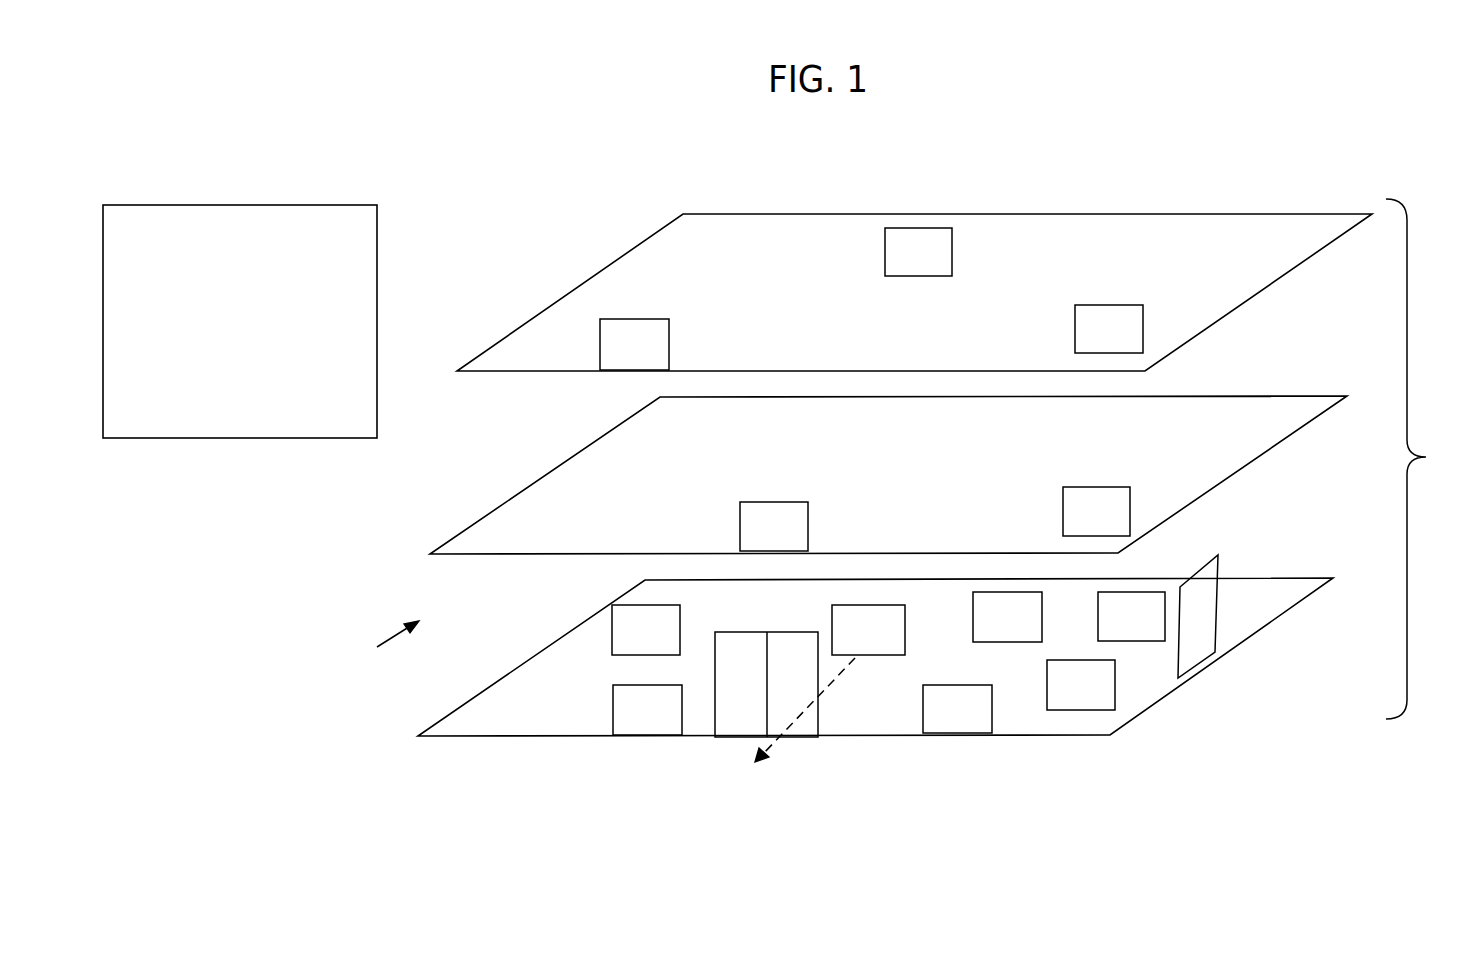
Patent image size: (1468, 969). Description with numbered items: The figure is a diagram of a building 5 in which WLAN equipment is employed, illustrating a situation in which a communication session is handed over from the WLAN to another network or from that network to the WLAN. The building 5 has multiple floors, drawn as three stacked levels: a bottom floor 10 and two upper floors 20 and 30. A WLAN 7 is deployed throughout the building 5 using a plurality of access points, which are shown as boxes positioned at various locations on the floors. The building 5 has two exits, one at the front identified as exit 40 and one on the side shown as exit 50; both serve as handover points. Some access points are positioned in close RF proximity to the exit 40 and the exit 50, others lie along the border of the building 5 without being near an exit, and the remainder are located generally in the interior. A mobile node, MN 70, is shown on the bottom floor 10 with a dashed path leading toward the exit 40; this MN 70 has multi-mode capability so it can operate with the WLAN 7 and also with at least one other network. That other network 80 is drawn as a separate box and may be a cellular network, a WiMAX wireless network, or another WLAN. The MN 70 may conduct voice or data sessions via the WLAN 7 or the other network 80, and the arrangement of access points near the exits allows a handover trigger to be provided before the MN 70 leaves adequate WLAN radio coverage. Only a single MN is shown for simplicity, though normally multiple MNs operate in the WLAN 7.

The building 5 is at (1419, 459).
The bottom floor 10 is at (1299, 602).
The upper floor 20 is at (1233, 474).
The upper floor 30 is at (1264, 289).
The front exit 40 is at (755, 632).
The side exit 50 is at (1218, 603).
The mobile node 70 is at (830, 617).
The other network 80 is at (338, 205).
The WLAN 7 is at (341, 667).